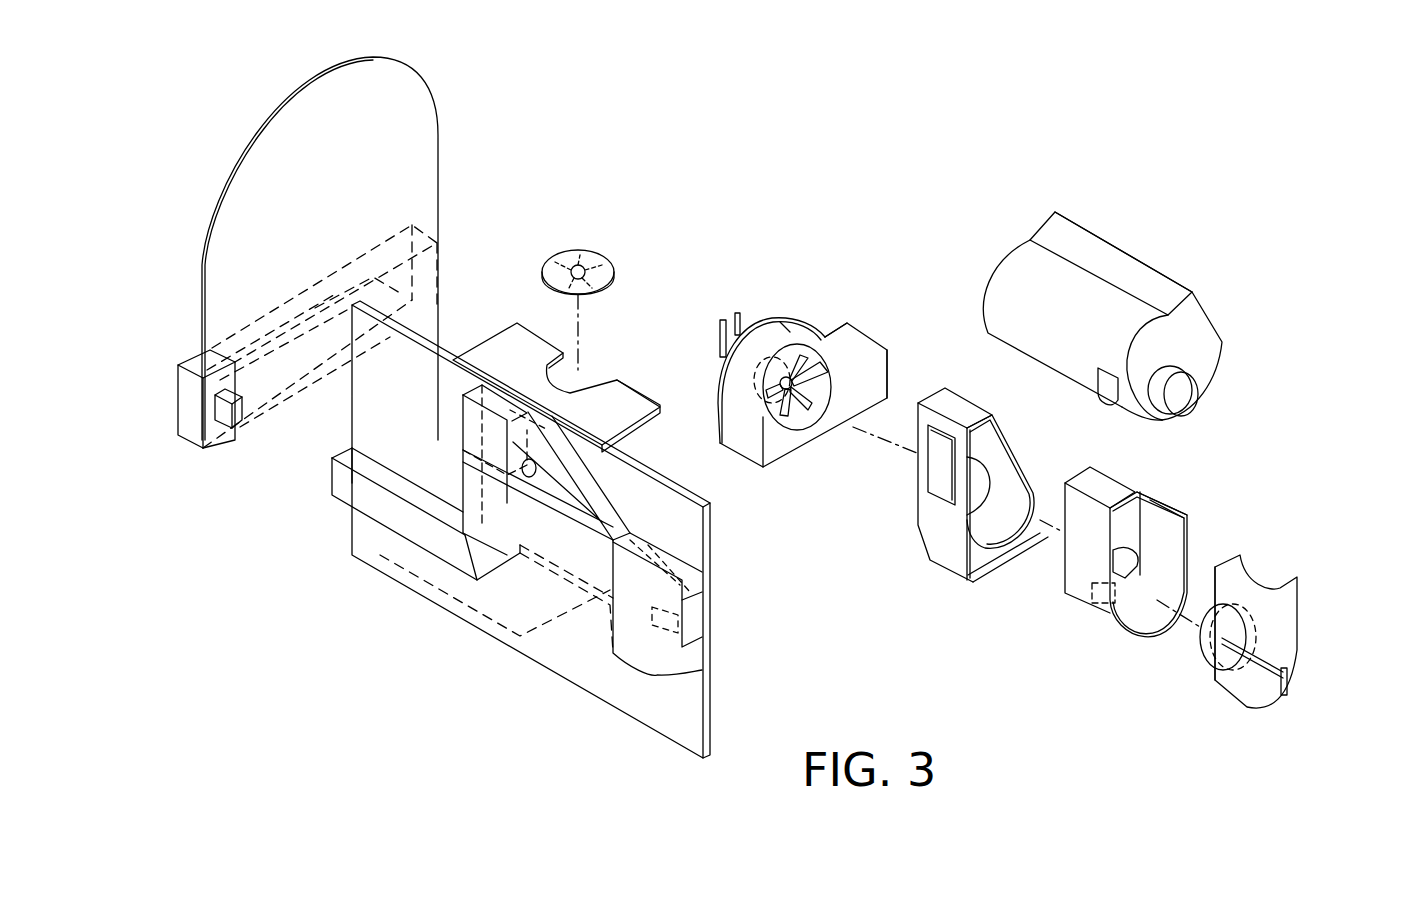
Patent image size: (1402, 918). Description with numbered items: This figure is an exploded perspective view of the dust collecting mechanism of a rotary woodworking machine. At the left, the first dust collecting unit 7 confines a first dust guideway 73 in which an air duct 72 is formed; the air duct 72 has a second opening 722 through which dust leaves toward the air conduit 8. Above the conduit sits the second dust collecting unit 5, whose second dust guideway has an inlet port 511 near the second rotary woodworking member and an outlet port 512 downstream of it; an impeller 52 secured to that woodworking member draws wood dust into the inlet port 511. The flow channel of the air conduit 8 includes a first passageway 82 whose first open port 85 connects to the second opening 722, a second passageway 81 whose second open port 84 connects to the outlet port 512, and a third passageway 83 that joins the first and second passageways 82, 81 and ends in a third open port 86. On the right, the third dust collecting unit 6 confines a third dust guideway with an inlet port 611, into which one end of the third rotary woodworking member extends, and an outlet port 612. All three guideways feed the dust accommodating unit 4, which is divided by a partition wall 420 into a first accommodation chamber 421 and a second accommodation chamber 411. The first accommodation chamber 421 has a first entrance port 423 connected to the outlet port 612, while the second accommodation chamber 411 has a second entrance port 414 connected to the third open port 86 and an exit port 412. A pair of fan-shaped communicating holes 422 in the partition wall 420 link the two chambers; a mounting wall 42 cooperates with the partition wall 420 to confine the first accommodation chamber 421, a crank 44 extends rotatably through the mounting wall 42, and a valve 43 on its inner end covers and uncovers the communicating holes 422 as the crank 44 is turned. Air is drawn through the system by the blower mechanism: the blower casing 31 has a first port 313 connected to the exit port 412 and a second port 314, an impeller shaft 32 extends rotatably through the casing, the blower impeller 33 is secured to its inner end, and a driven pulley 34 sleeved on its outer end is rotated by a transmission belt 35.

The blower casing 31 is at (790, 330).
The first port 313 is at (795, 335).
The second port 314 is at (880, 345).
The impeller shaft 32 is at (785, 355).
The blower impeller 33 is at (846, 345).
The driven pulley 34 is at (722, 340).
The transmission belt 35 is at (737, 318).
The dust accommodating unit 4 is at (1205, 690).
The second accommodation chamber 411 is at (993, 528).
The exit port 412 is at (973, 475).
The second entrance port 414 is at (940, 440).
The partition wall 420 is at (1137, 505).
The first accommodation chamber 421 is at (1140, 620).
The communicating holes 422 is at (1113, 560).
The first entrance port 423 is at (1157, 510).
The mounting wall 42 is at (1250, 705).
The valve 43 is at (1210, 660).
The crank 44 is at (1290, 672).
The second dust collecting unit 5 is at (470, 335).
The inlet port 511 is at (555, 375).
The outlet port 512 is at (520, 400).
The impeller 52 is at (577, 250).
The third dust collecting unit 6 is at (1215, 315).
The inlet port 611 is at (1088, 215).
The outlet port 612 is at (1112, 370).
The first dust collecting unit 7 is at (178, 448).
The air duct 72 is at (290, 340).
The second opening 722 is at (230, 428).
The first dust guideway 73 is at (240, 350).
The air conduit 8 is at (372, 552).
The second passageway 81 is at (575, 400).
The first passageway 82 is at (425, 570).
The third passageway 83 is at (583, 610).
The second open port 84 is at (470, 445).
The first open port 85 is at (332, 500).
The third open port 86 is at (662, 645).